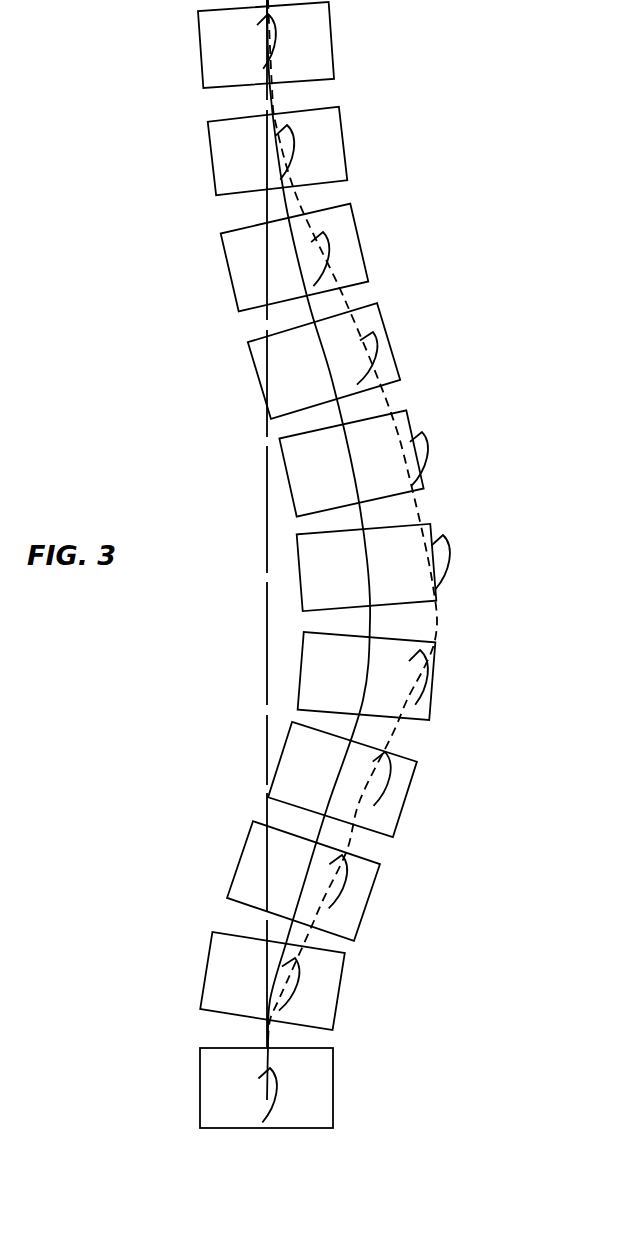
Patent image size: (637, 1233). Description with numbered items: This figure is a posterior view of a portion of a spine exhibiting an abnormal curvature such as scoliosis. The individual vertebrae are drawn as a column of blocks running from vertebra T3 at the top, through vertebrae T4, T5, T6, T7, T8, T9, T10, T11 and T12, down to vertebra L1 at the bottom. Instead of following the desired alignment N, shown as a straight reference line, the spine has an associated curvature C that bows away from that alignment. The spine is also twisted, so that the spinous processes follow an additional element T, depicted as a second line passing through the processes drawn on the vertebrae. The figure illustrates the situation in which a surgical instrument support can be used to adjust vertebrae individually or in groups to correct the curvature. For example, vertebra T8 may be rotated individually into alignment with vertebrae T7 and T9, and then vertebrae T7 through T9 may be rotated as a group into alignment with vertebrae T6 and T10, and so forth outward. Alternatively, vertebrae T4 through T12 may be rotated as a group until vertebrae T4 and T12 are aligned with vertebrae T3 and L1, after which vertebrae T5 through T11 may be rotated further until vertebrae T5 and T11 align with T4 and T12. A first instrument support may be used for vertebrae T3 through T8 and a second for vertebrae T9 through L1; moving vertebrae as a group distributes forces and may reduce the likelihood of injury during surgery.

The vertebra T3 is at (325, 52).
The vertebra T4 is at (340, 160).
The vertebra T5 is at (357, 260).
The vertebra T6 is at (393, 367).
The vertebra T7 is at (425, 482).
The vertebra T8 is at (430, 590).
The vertebra T9 is at (432, 712).
The vertebra T10 is at (390, 818).
The vertebra T11 is at (352, 923).
The vertebra T12 is at (327, 1010).
The vertebra L1 is at (325, 1108).
The desired alignment N is at (265, 535).
The curvature C is at (370, 616).
The additional element T is at (445, 552).